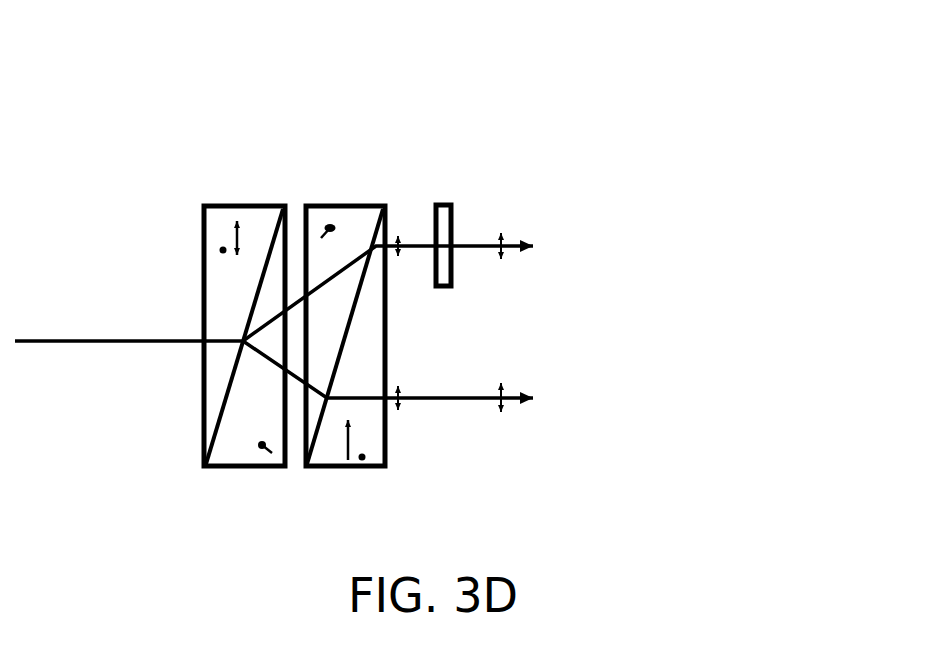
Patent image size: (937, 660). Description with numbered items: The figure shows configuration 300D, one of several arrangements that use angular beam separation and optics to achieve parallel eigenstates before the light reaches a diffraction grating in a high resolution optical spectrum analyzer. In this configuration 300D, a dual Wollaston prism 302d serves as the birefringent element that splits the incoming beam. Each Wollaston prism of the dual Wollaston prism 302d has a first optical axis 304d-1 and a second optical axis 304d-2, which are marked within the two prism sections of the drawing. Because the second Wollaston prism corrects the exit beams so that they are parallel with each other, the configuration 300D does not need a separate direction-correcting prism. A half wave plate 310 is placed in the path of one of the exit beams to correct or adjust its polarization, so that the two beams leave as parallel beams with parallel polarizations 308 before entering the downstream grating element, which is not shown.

The configuration 300D is at (463, 62).
The dual Wollaston prism 302d is at (347, 202).
The first optical axis 304d-1 is at (322, 232).
The second optical axis 304d-2 is at (420, 497).
The parallel beams with parallel polarizations 308 is at (552, 389).
The half wave plate 310 is at (479, 197).